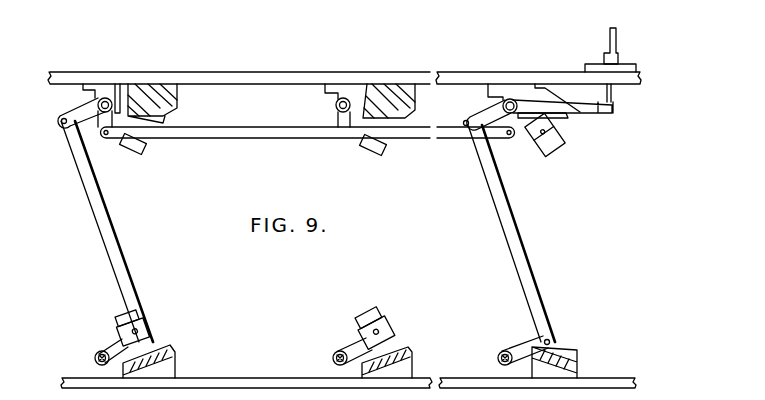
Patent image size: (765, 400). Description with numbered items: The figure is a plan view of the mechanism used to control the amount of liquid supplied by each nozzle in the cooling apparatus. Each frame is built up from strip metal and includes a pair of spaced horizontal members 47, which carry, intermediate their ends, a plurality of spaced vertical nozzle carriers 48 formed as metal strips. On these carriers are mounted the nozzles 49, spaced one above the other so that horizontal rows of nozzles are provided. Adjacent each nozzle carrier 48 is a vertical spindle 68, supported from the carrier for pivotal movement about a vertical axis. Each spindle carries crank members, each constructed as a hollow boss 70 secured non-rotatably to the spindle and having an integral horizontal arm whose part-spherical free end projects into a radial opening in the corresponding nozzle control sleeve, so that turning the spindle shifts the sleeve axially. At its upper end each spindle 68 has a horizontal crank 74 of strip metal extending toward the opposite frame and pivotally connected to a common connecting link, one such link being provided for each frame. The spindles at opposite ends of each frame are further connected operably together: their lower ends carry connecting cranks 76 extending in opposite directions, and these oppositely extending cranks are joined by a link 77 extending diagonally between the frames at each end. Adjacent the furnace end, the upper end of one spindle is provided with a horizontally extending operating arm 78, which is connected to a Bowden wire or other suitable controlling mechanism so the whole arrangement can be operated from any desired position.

The horizontal members 47 is at (270, 72).
The nozzle carriers 48 is at (178, 102).
The nozzles 49 is at (147, 138).
The spindles 68 is at (108, 97).
The hollow boss 70 is at (355, 350).
The horizontal crank 74 is at (98, 128).
The connecting cranks 76 is at (81, 114).
The link 77 is at (106, 227).
The operating arm 78 is at (570, 108).